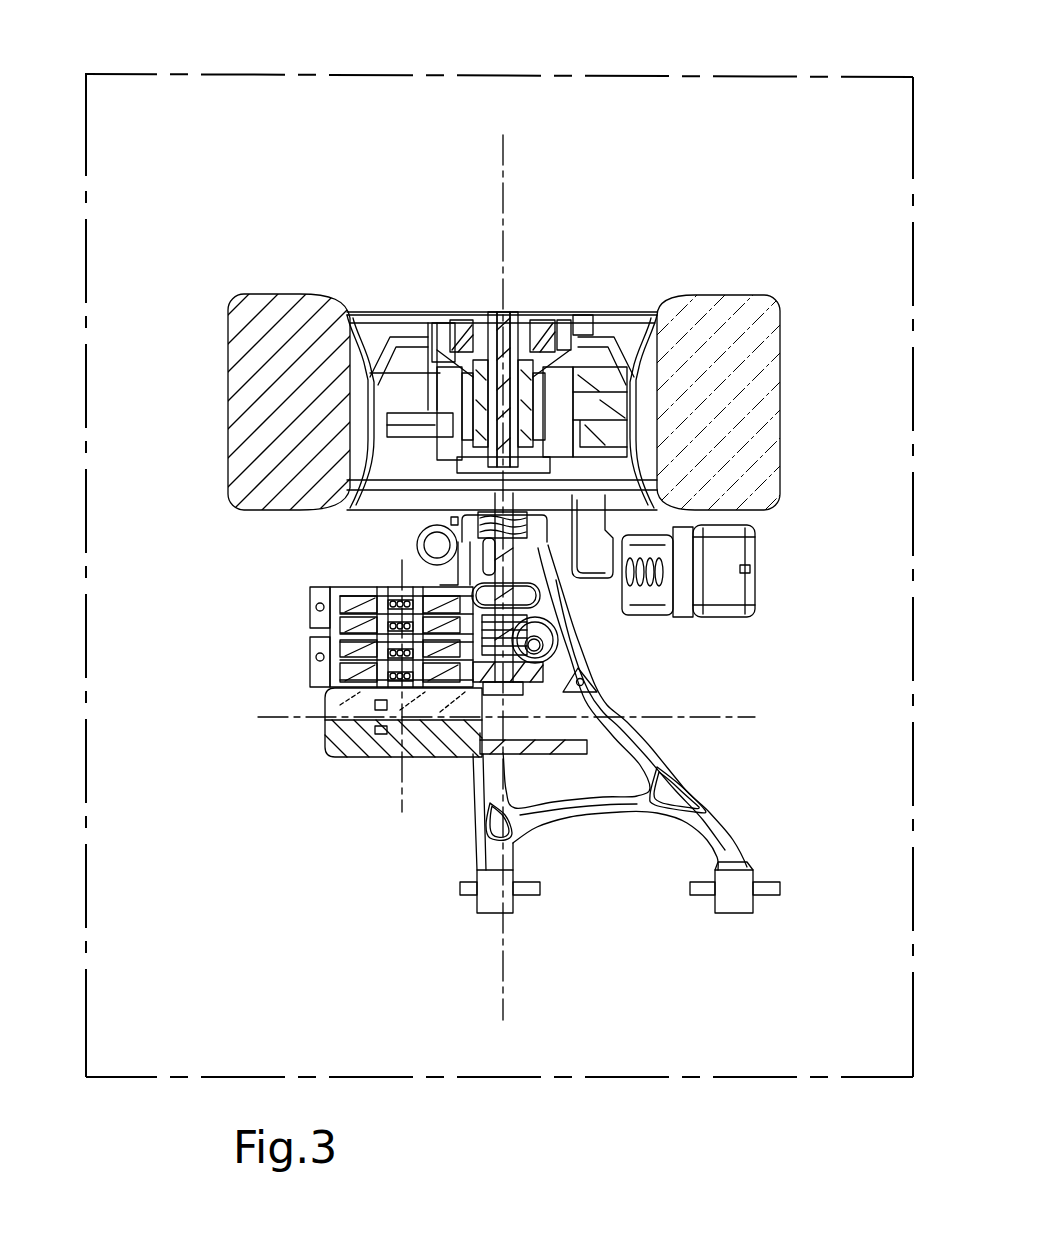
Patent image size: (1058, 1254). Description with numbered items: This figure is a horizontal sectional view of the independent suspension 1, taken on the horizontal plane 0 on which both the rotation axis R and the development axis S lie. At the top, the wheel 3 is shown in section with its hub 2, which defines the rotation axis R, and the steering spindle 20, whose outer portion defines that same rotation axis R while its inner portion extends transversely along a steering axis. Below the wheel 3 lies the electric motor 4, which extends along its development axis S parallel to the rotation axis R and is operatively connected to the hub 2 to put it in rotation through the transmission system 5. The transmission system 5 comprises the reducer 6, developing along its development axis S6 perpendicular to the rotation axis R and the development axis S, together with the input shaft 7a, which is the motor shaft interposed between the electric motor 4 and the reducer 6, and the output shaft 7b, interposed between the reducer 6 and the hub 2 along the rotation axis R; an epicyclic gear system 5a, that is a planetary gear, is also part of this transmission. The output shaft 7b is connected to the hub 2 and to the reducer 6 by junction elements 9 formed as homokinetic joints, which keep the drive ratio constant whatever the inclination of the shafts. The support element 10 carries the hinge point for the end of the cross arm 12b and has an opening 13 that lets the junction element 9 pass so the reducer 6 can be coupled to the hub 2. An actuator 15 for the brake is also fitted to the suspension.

The horizontal plane 0 is at (241, 70).
The independent suspension 1 is at (200, 335).
The hub 2 is at (553, 298).
The wheel 3 is at (753, 298).
The electric motor 4 is at (310, 615).
The transmission system 5 is at (437, 778).
The epicyclic gear system 5a is at (457, 297).
The reducer 6 is at (323, 754).
The input shaft 7a is at (372, 677).
The output shaft 7b is at (547, 645).
The junction elements 9 is at (452, 522).
The support element 10 is at (550, 524).
The cross arm 12b is at (717, 822).
The opening 13 is at (527, 537).
The actuator for the brake 15 is at (767, 605).
The steering spindle 20 is at (518, 298).
The rotation axis R is at (503, 198).
The development axis S is at (402, 798).
The development axis of the reducer S6 is at (263, 718).